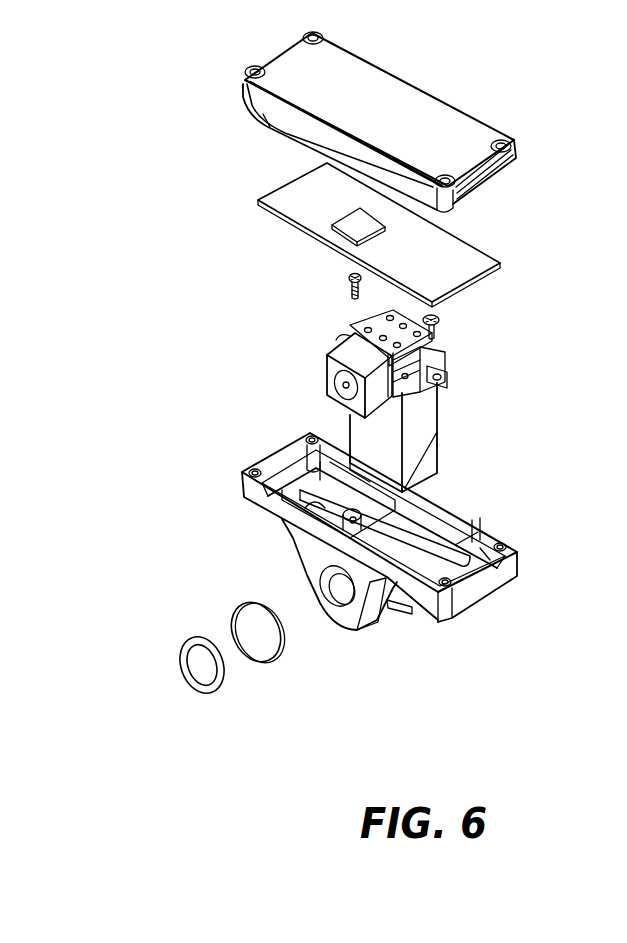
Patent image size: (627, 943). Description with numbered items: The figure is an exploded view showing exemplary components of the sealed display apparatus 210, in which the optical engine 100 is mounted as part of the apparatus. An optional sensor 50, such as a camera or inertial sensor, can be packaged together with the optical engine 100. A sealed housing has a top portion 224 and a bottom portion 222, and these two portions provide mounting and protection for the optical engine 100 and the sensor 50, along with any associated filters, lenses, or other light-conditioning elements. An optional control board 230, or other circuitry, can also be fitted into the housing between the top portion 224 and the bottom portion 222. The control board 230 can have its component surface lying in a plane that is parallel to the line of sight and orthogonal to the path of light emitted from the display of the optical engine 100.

The sealed display apparatus 210 is at (212, 155).
The top portion 224 is at (486, 126).
The control board 230 is at (476, 287).
The sensor 50 is at (325, 370).
The optical engine 100 is at (349, 378).
The bottom portion 222 is at (477, 598).